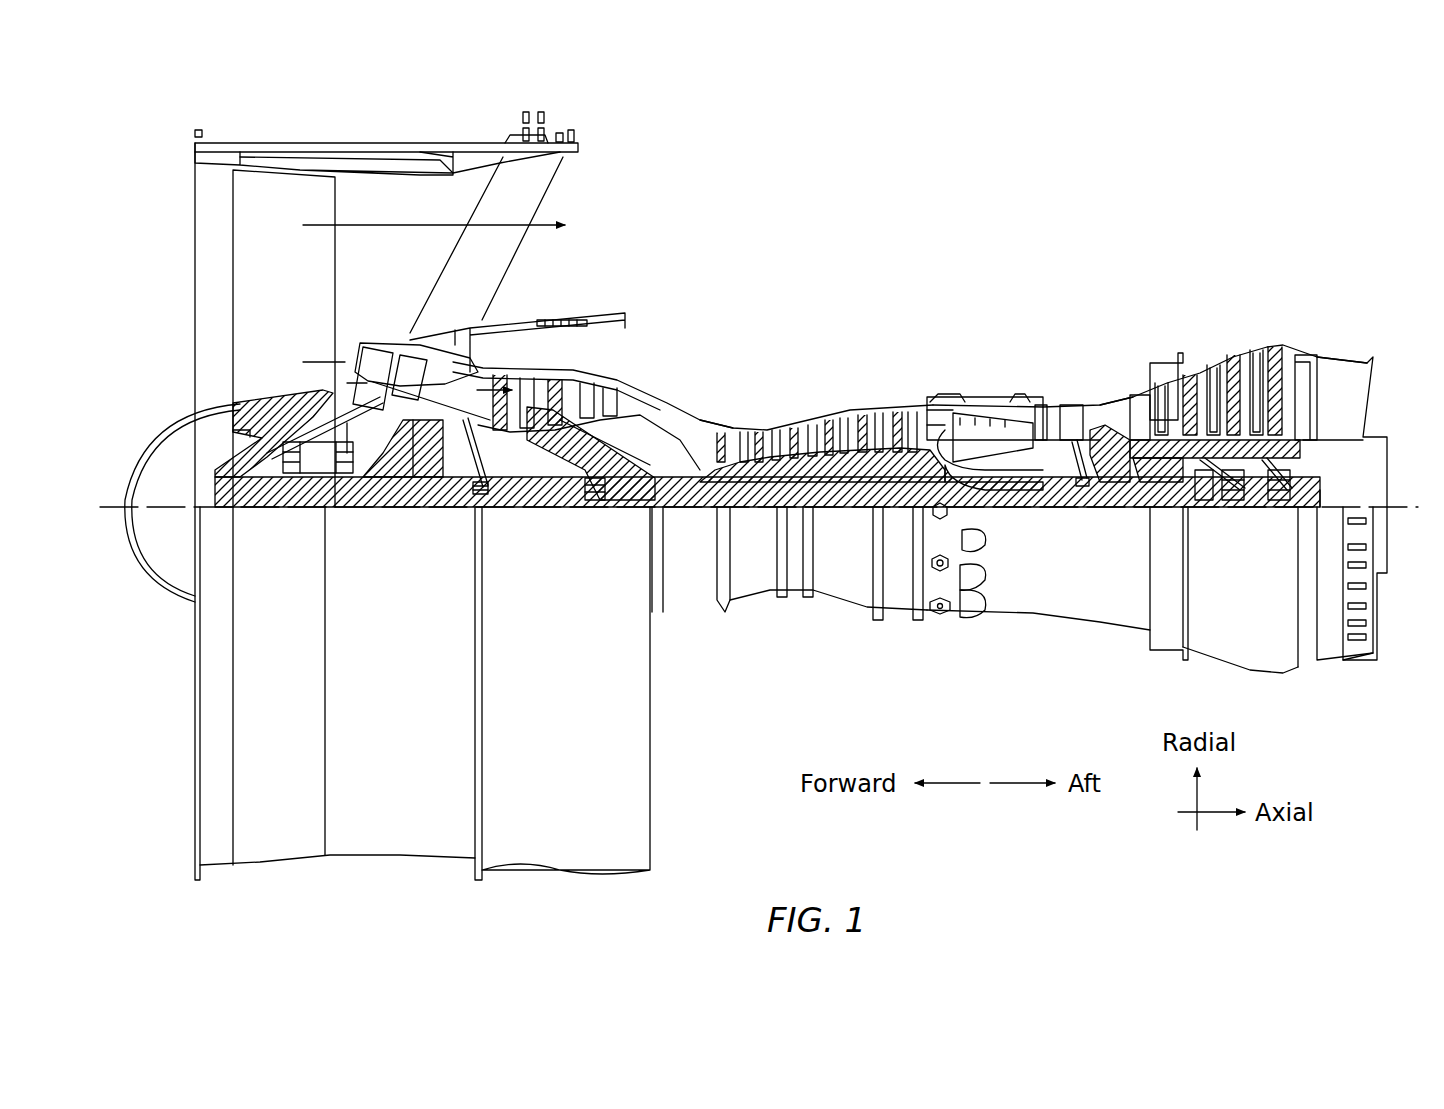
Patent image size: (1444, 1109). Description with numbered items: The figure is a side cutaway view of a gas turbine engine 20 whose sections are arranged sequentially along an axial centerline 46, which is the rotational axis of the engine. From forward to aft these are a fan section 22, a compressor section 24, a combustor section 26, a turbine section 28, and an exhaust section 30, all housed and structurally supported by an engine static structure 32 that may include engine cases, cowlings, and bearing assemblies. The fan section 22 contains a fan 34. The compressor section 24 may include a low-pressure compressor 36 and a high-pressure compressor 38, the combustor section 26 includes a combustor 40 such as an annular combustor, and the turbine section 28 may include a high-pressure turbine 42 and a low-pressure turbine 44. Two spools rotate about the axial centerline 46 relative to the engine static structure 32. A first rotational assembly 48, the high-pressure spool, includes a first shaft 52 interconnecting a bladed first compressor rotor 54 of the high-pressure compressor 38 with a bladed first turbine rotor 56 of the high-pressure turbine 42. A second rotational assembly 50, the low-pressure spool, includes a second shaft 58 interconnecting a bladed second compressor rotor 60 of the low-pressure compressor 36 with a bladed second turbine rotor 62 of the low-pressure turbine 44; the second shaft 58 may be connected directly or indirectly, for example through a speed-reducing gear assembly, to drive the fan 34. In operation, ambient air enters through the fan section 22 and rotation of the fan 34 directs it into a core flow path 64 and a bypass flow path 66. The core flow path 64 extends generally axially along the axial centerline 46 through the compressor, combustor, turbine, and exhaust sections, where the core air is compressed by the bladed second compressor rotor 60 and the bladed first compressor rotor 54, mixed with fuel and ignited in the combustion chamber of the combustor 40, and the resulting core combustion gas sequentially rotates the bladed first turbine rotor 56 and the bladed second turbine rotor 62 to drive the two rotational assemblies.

The gas turbine engine 20 is at (1226, 207).
The fan section 22 is at (476, 118).
The compressor section 24 is at (483, 275).
The combustor section 26 is at (1050, 275).
The turbine section 28 is at (1305, 275).
The exhaust section 30 is at (1418, 275).
The engine static structure 32 is at (1023, 616).
The fan 34 is at (263, 320).
The low-pressure compressor 36 is at (596, 368).
The high-pressure compressor 38 is at (837, 402).
The combustor 40 is at (988, 427).
The high-pressure turbine 42 is at (1073, 395).
The low-pressure turbine 44 is at (1230, 337).
The axial centerline 46 is at (1407, 513).
The first rotational assembly 48 is at (860, 476).
The second rotational assembly 50 is at (1133, 517).
The first shaft 52 is at (995, 484).
The bladed first compressor rotor 54 is at (790, 470).
The bladed first turbine rotor 56 is at (1057, 469).
The second shaft 58 is at (597, 497).
The bladed second compressor rotor 60 is at (527, 420).
The bladed second turbine rotor 62 is at (1203, 445).
The core flow path 64 is at (413, 337).
The bypass flow path 66 is at (553, 220).